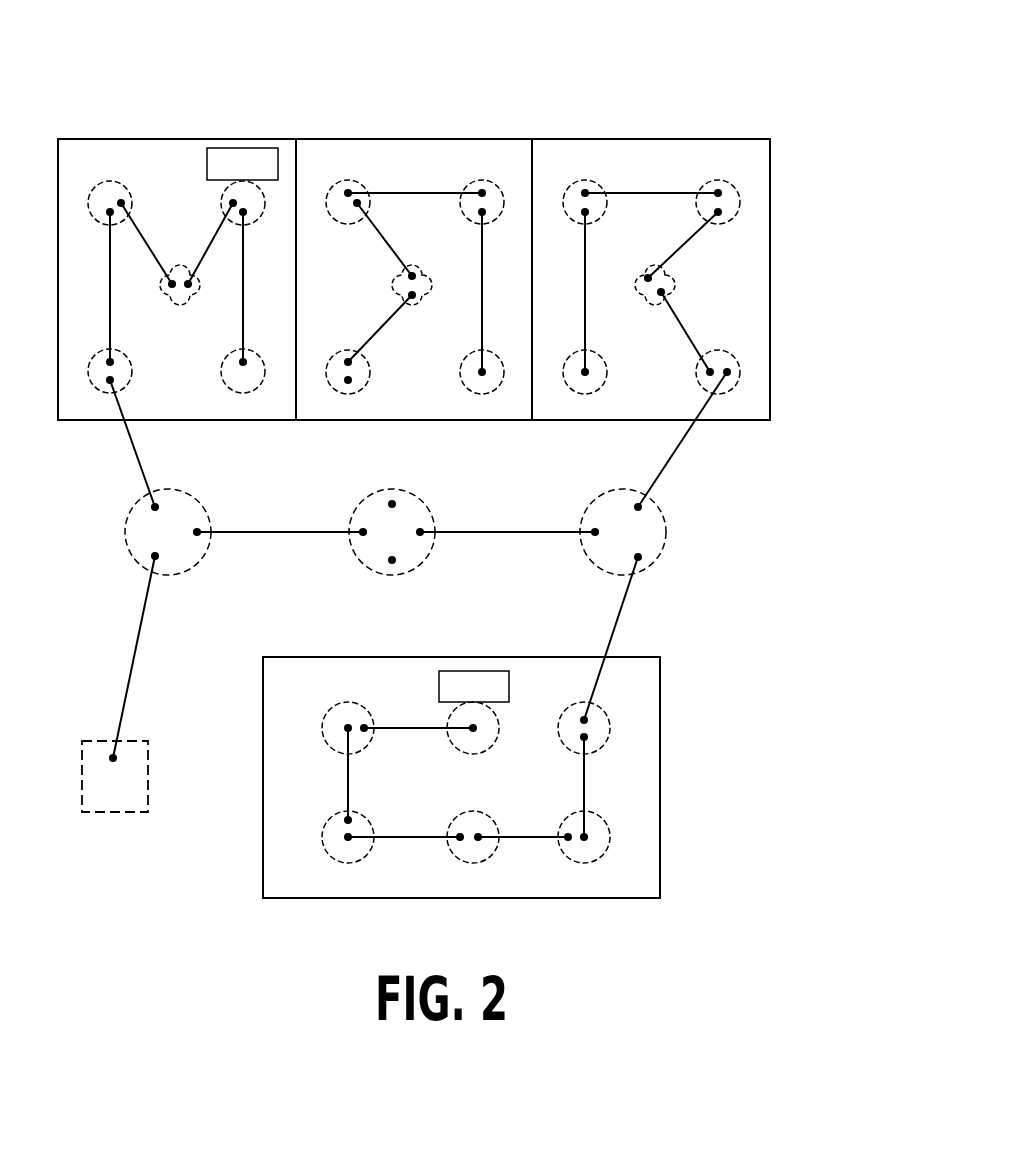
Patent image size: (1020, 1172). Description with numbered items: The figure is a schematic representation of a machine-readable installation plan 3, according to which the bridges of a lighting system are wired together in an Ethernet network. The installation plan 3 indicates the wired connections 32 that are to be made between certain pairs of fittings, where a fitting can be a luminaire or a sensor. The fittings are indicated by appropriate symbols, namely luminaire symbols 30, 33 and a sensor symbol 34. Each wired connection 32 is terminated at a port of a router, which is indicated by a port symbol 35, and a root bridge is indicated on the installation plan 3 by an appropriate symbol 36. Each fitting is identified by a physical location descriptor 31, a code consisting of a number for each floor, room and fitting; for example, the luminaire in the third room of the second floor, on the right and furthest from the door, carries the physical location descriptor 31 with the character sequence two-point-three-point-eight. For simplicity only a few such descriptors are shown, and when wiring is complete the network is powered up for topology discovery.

The installation plan 3 is at (697, 86).
The luminaire symbol 30 is at (112, 182).
The physical location descriptor 31 is at (243, 148).
The wired connection 32 is at (138, 463).
The luminaire symbol 33 is at (363, 566).
The sensor symbol 34 is at (672, 291).
The port symbol 35 is at (199, 537).
The root bridge symbol 36 is at (120, 813).